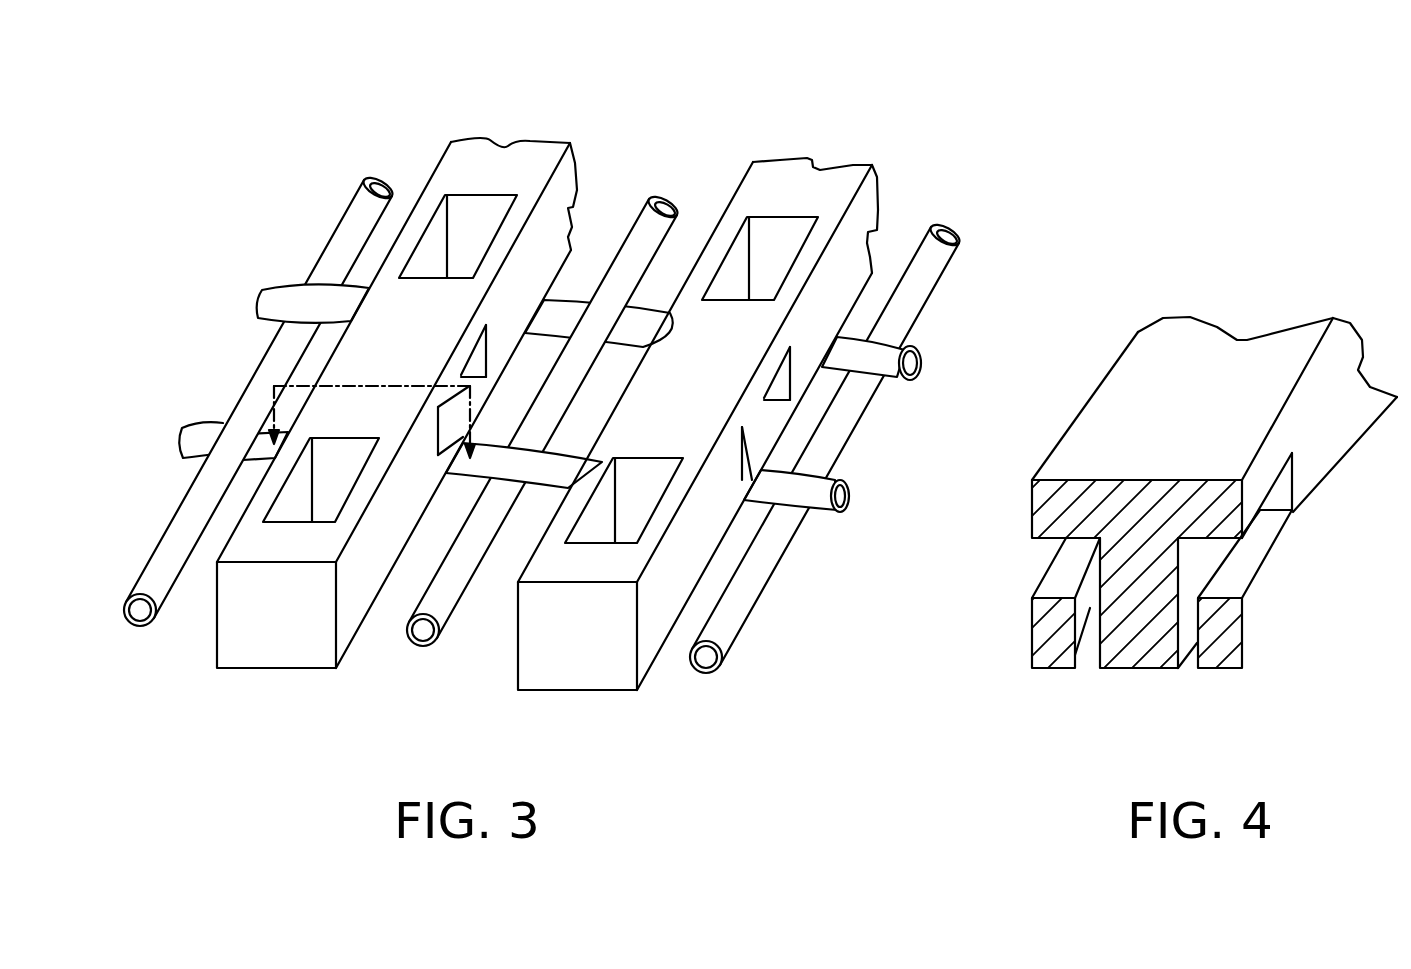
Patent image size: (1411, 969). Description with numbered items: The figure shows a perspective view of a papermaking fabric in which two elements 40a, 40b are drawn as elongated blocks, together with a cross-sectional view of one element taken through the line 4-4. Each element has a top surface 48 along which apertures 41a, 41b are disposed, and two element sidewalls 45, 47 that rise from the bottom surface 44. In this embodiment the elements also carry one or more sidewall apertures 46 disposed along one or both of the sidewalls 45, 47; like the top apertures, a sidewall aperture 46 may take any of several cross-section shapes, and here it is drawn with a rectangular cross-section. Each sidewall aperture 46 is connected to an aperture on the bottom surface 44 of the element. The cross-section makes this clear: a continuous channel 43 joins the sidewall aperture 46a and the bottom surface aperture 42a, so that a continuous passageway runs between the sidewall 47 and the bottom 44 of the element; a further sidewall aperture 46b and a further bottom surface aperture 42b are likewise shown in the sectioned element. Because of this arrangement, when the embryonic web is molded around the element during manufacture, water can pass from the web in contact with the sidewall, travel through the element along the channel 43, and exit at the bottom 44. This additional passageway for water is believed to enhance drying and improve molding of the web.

In FIG. 3, the element sidewall 45 is at (543, 412).
In FIG. 4, the element sidewall 45 is at (1115, 520).
In FIG. 3, the element 40a is at (416, 412).
In FIG. 3, the element 40b is at (783, 182).
In FIG. 3, the aperture 41a is at (473, 230).
In FIG. 3, the aperture 41b is at (338, 470).
In FIG. 4, the bottom surface aperture 42a is at (1192, 682).
In FIG. 4, the bottom surface aperture 42b is at (1090, 682).
In FIG. 4, the continuous channel 43 is at (1087, 608).
In FIG. 3, the bottom surface 44 is at (283, 695).
In FIG. 3, the sidewall aperture 46 is at (477, 362).
In FIG. 4, the sidewall aperture 46a is at (1257, 520).
In FIG. 4, the sidewall aperture 46b is at (1018, 560).
In FIG. 3, the element sidewall 47 is at (520, 266).
In FIG. 4, the element sidewall 47 is at (1306, 440).
In FIG. 3, the top surface 48 is at (402, 321).
In FIG. 4, the top surface 48 is at (1167, 415).
In FIG. 3, the section line 4- 4 is at (361, 444).